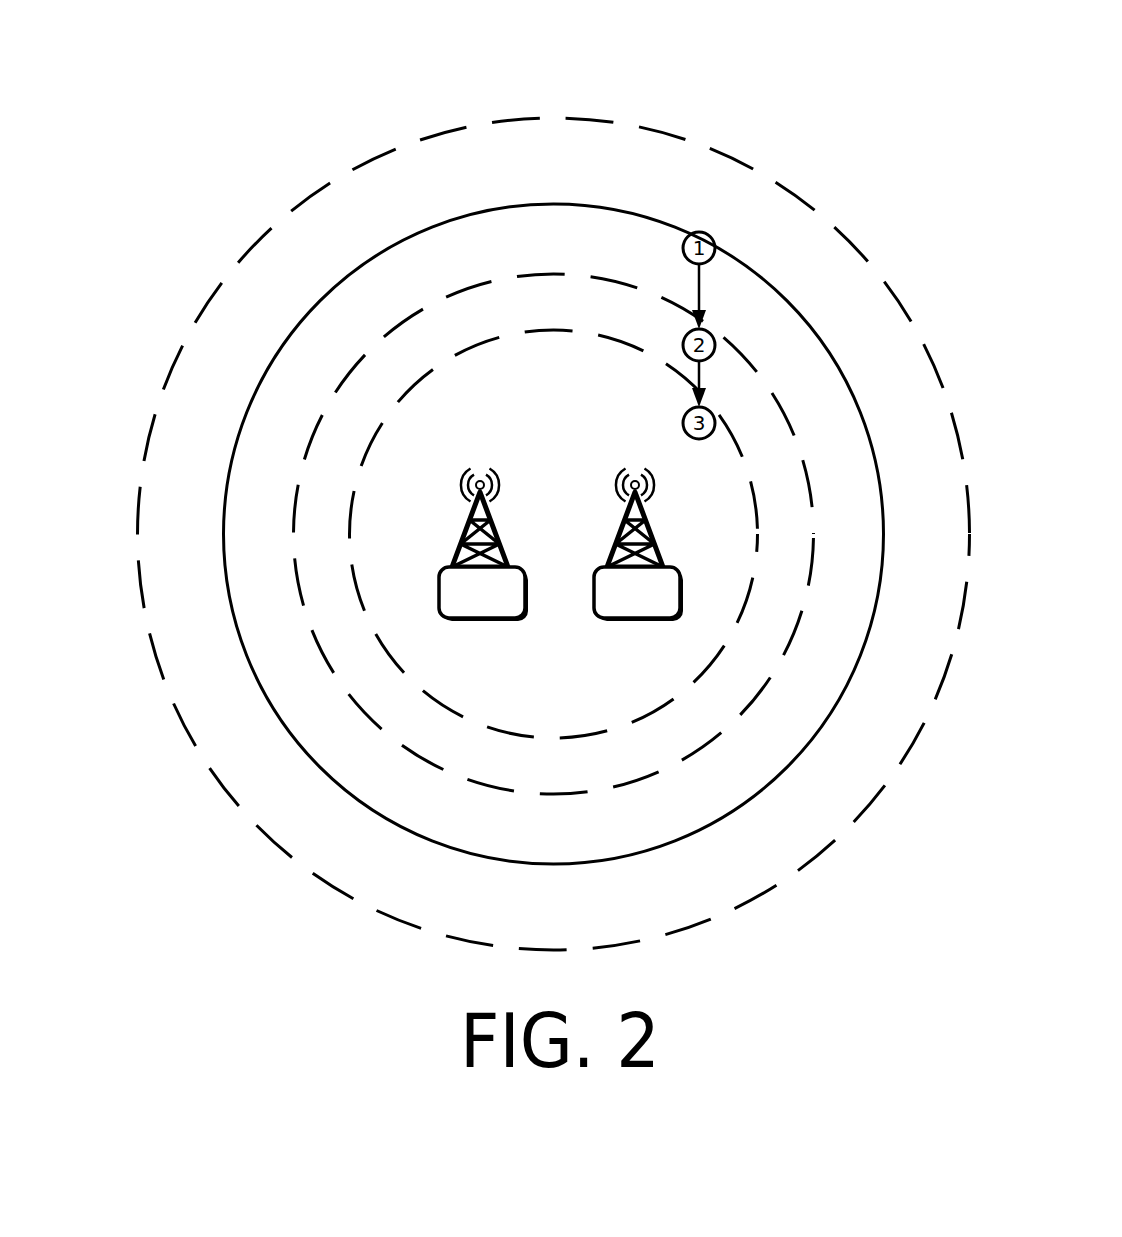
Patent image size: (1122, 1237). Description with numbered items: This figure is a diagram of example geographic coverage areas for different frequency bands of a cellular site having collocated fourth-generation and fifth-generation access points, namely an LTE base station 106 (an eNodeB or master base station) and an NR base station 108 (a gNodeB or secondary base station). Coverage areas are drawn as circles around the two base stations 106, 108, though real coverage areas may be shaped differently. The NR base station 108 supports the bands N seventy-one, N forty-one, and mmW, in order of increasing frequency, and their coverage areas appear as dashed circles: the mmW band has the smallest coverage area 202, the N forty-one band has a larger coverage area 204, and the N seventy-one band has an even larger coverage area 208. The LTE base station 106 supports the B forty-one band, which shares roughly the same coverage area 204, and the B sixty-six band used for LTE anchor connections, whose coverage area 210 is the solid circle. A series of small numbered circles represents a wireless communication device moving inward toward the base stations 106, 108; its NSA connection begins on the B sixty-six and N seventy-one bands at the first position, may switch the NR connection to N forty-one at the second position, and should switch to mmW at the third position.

The LTE base station 106 is at (442, 571).
The NR base station 108 is at (667, 573).
The coverage area 202 is at (358, 525).
The coverage area 204 is at (333, 425).
The coverage area 208 is at (357, 178).
The coverage area 210 is at (328, 312).